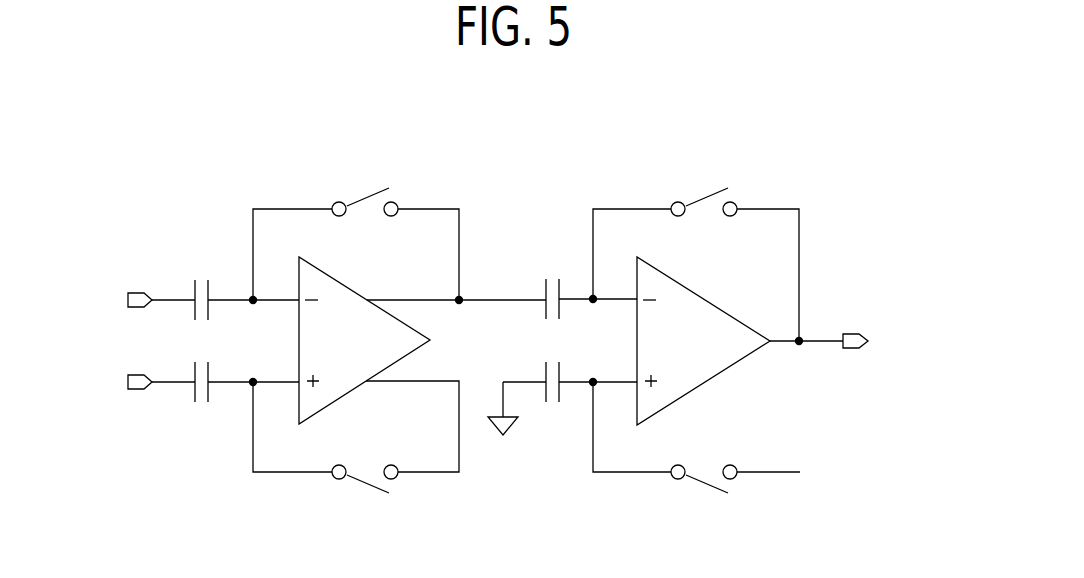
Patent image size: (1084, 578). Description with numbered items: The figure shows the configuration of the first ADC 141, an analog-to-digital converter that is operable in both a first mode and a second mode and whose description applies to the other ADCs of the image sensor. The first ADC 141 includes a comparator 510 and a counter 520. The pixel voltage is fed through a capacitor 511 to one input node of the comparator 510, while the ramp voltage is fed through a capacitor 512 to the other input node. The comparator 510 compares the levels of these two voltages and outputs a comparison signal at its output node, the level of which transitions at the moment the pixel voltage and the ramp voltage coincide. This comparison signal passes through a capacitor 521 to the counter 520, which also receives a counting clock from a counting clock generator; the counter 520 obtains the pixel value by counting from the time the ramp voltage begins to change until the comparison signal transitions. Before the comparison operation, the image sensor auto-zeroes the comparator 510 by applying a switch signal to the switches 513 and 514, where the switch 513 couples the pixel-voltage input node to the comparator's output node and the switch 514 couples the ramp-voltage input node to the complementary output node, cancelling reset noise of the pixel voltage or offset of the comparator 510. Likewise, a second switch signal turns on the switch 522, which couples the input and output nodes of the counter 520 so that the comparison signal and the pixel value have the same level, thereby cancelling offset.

The first ADC 141 is at (811, 120).
The comparator 510 is at (364, 340).
The capacitor 511 is at (194, 285).
The capacitor 512 is at (191, 400).
The switch 513 is at (370, 195).
The switch 514 is at (363, 485).
The counter 520 is at (703, 341).
The capacitor 521 is at (543, 290).
The switch 522 is at (702, 204).